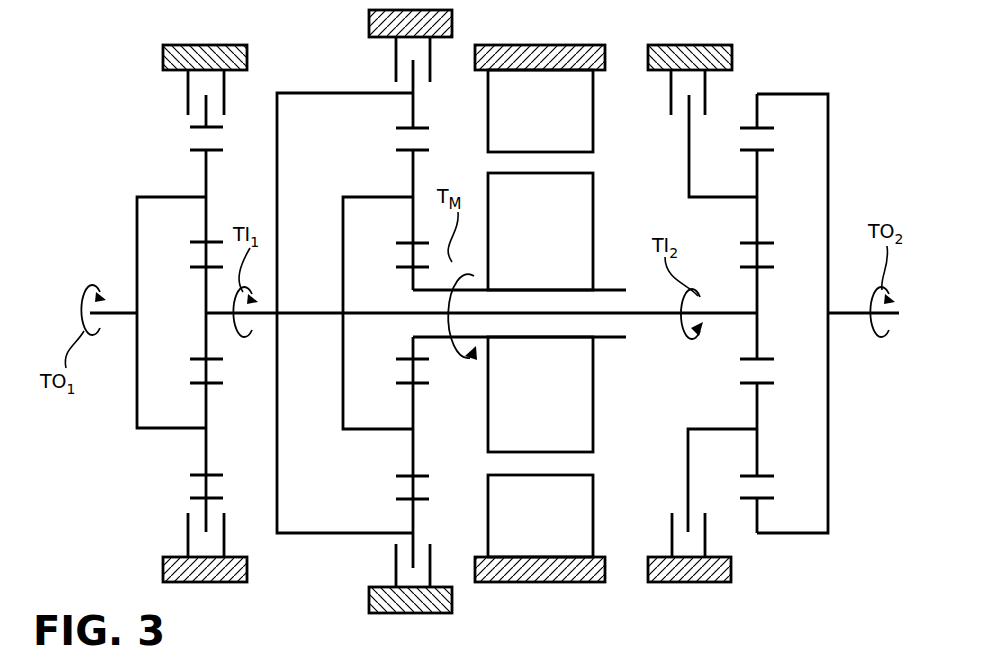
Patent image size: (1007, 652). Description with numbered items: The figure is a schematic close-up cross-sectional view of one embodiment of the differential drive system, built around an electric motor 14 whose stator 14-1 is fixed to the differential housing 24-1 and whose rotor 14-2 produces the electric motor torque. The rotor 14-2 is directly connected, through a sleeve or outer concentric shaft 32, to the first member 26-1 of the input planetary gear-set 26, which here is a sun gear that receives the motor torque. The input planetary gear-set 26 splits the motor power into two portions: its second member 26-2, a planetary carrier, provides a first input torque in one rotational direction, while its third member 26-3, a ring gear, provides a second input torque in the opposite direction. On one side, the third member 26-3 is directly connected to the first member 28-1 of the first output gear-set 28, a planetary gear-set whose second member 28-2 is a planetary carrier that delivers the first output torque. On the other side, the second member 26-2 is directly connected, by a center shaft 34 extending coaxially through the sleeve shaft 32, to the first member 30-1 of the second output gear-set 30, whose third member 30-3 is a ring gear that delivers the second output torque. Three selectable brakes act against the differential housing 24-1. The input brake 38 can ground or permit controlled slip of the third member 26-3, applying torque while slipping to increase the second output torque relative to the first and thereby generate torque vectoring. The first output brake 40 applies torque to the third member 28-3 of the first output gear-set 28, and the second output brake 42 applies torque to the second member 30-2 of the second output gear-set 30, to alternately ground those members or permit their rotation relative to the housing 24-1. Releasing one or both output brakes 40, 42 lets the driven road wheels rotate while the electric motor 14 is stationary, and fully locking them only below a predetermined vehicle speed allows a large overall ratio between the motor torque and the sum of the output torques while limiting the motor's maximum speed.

The electric motor 14 is at (545, 293).
The stator 14-1 is at (540, 111).
The rotor 14-2 is at (540, 231).
The differential housing 24-1 is at (536, 45).
The input planetary gear-set 26 is at (376, 279).
The first member of the input planetary gear-set 26-1 is at (420, 362).
The second member of the input planetary gear-set 26-2 is at (343, 200).
The third member of the input planetary gear-set 26-3 is at (418, 128).
The first output gear-set 28 is at (164, 261).
The first member of the first output planetary gear-set 28-1 is at (212, 361).
The second member of the first output planetary gear-set 28-2 is at (137, 200).
The third member of the first output planetary gear-set 28-3 is at (216, 130).
The second output gear-set 30 is at (750, 281).
The first member of the second output planetary gear-set 30-1 is at (745, 265).
The second member of the second output planetary gear-set 30-2 is at (689, 165).
The third member of the second output planetary gear-set 30-3 is at (797, 94).
The sleeve shaft 32 is at (606, 290).
The center shaft 34 is at (648, 316).
The input brake 38 is at (430, 60).
The first output brake 40 is at (222, 95).
The second output brake 42 is at (706, 100).